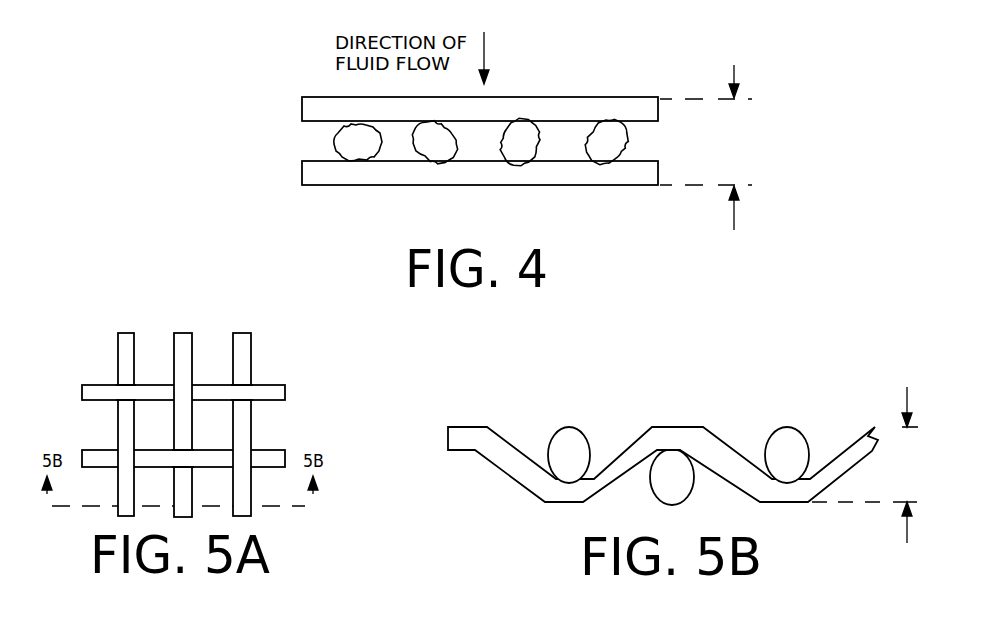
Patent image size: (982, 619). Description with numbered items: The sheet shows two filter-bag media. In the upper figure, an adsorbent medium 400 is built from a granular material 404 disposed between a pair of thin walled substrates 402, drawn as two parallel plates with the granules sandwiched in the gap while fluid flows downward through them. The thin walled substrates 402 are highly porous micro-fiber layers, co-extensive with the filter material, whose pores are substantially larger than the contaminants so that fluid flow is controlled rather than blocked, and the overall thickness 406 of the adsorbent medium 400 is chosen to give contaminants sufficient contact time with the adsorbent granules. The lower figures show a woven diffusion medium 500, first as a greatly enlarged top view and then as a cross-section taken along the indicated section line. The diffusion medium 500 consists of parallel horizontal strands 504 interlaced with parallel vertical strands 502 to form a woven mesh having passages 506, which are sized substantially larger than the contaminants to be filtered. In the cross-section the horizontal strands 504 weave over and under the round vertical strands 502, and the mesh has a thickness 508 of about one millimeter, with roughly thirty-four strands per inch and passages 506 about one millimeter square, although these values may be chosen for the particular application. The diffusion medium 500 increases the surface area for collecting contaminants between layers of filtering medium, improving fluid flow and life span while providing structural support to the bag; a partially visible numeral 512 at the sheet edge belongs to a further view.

In FIG. 4, the adsorbent medium 400 is at (610, 71).
In FIG. 4, the thin walled substrates 402 is at (302, 109).
In FIG. 4, the granular material 404 is at (631, 146).
In FIG. 4, the thickness 406 is at (706, 135).
In FIG. 5A, the diffusion medium 500 is at (302, 385).
In FIG. 5B, the diffusion medium 500 is at (763, 412).
In FIG. 5A, the vertical strands 502 is at (240, 333).
In FIG. 5A, the horizontal strands 504 is at (82, 389).
In FIG. 5B, the horizontal strands 504 is at (449, 439).
In FIG. 5A, the passages 506 is at (160, 433).
In FIG. 5B, the thickness 508 is at (867, 452).
In FIG. 5A, the wires 512 is at (227, 618).